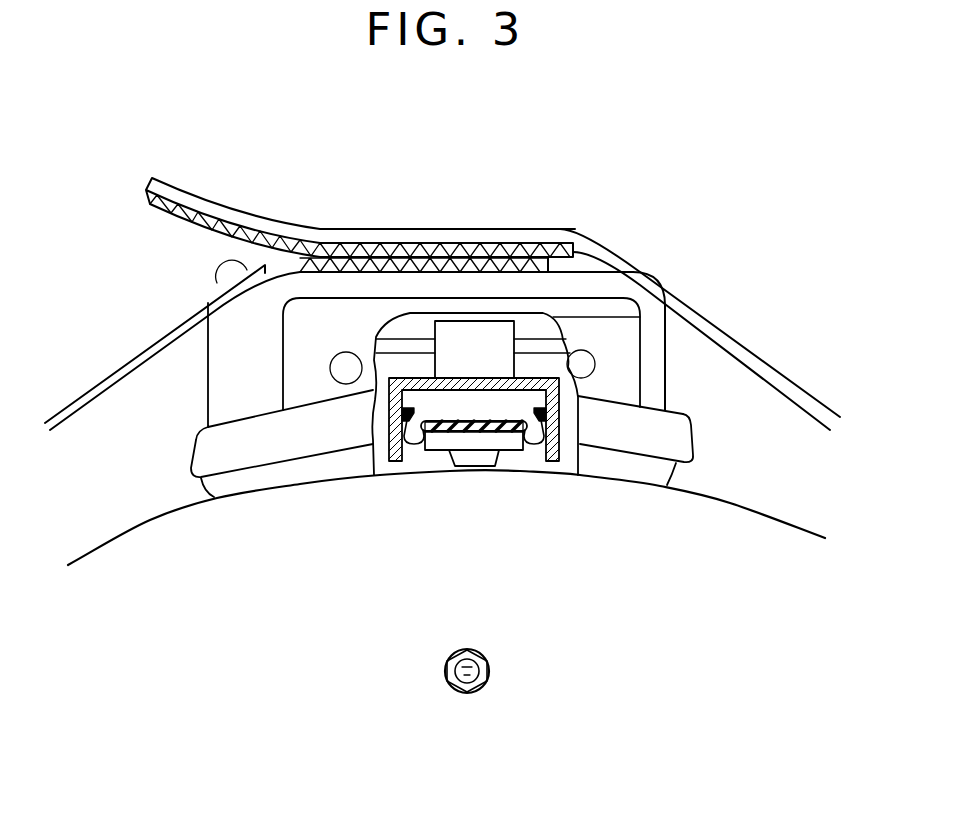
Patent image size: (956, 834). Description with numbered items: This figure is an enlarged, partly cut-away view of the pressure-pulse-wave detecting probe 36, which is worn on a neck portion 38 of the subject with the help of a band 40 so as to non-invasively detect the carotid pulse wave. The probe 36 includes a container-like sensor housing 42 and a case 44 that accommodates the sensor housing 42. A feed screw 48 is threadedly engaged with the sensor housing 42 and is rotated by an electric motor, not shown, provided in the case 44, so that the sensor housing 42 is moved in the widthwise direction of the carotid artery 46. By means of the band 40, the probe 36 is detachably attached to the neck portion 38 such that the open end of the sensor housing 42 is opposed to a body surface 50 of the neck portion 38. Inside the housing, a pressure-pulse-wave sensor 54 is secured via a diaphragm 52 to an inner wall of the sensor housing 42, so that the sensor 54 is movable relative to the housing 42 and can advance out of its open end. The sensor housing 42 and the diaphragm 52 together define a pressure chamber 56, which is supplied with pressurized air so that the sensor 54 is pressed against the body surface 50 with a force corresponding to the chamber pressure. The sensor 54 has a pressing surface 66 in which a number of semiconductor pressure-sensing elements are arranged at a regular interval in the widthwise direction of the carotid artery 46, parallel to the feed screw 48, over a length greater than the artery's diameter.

The pressure-pulse-wave detecting probe 36 is at (116, 178).
The neck portion 38 is at (160, 537).
The band 40 is at (117, 370).
The sensor housing 42 is at (640, 390).
The case 44 is at (597, 280).
The carotid artery 46 is at (466, 712).
The feed screw 48 is at (655, 315).
The body surface 50 is at (730, 503).
The diaphragm 52 is at (533, 440).
The pressure-pulse-wave sensor 54 is at (447, 438).
The pressure chamber 56 is at (490, 415).
The pressing surface 66 is at (462, 472).